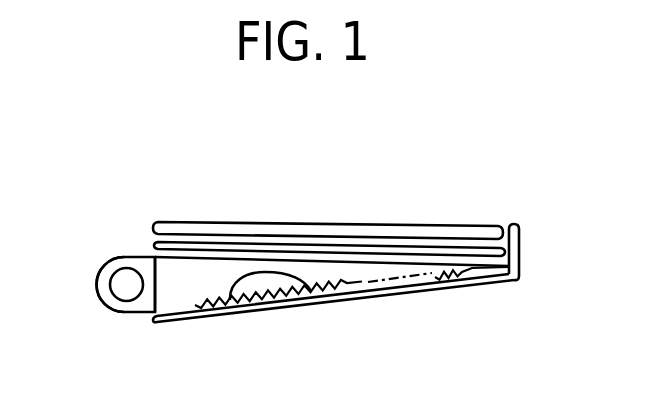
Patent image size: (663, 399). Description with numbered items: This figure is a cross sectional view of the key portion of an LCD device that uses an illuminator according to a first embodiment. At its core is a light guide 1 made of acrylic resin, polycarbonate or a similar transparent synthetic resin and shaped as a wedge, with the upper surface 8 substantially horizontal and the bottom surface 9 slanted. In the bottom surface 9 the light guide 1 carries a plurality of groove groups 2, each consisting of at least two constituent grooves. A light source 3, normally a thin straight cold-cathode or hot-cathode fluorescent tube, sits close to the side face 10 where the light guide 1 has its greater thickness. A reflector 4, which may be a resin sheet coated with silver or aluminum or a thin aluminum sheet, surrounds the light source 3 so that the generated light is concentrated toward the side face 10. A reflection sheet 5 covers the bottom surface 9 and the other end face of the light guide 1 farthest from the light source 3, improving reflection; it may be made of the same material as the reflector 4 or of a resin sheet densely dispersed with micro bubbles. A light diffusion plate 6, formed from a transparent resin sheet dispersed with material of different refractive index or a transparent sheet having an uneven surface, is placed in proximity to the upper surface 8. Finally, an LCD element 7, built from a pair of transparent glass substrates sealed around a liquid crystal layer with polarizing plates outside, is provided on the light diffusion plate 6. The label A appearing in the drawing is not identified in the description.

The light guide 1 is at (197, 265).
The groove groups 2 is at (448, 283).
The light source 3 is at (116, 285).
The reflector 4 is at (118, 256).
The reflection sheet 5 is at (505, 280).
The light diffusion plate 6 is at (463, 247).
The LCD element 7 is at (366, 222).
The upper surface 8 is at (278, 257).
The bottom surface 9 is at (364, 280).
The side face 10 is at (148, 300).
The spring A is at (286, 300).